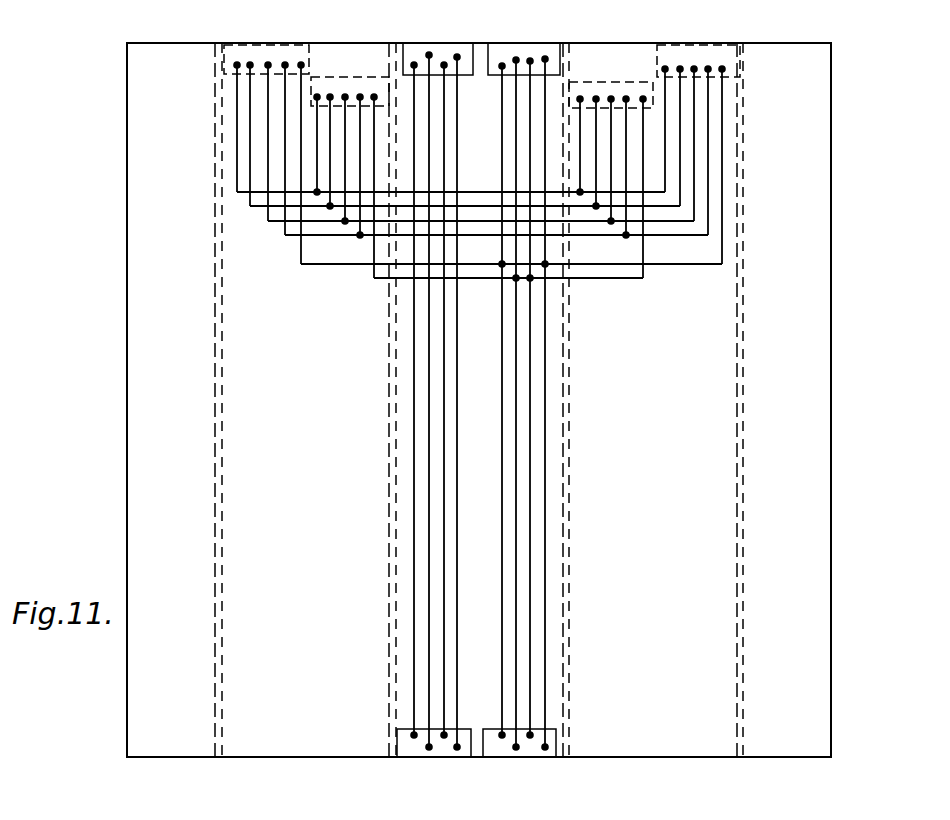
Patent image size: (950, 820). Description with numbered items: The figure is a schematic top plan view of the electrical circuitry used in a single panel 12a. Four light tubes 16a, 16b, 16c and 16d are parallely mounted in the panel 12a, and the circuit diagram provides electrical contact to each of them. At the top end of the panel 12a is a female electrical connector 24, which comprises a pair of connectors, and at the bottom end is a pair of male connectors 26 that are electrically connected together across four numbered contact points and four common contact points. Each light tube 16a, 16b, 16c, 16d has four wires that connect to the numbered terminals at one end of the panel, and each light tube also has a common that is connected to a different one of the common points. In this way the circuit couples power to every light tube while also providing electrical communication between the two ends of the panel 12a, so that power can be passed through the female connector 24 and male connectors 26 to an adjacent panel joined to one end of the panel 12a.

The panel 12a is at (800, 621).
The light tube 16a is at (279, 44).
The light tube 16b is at (360, 76).
The light tube 16c is at (620, 82).
The light tube 16d is at (754, 526).
The female electrical connector 24 is at (503, 36).
The male connectors 26 is at (516, 763).